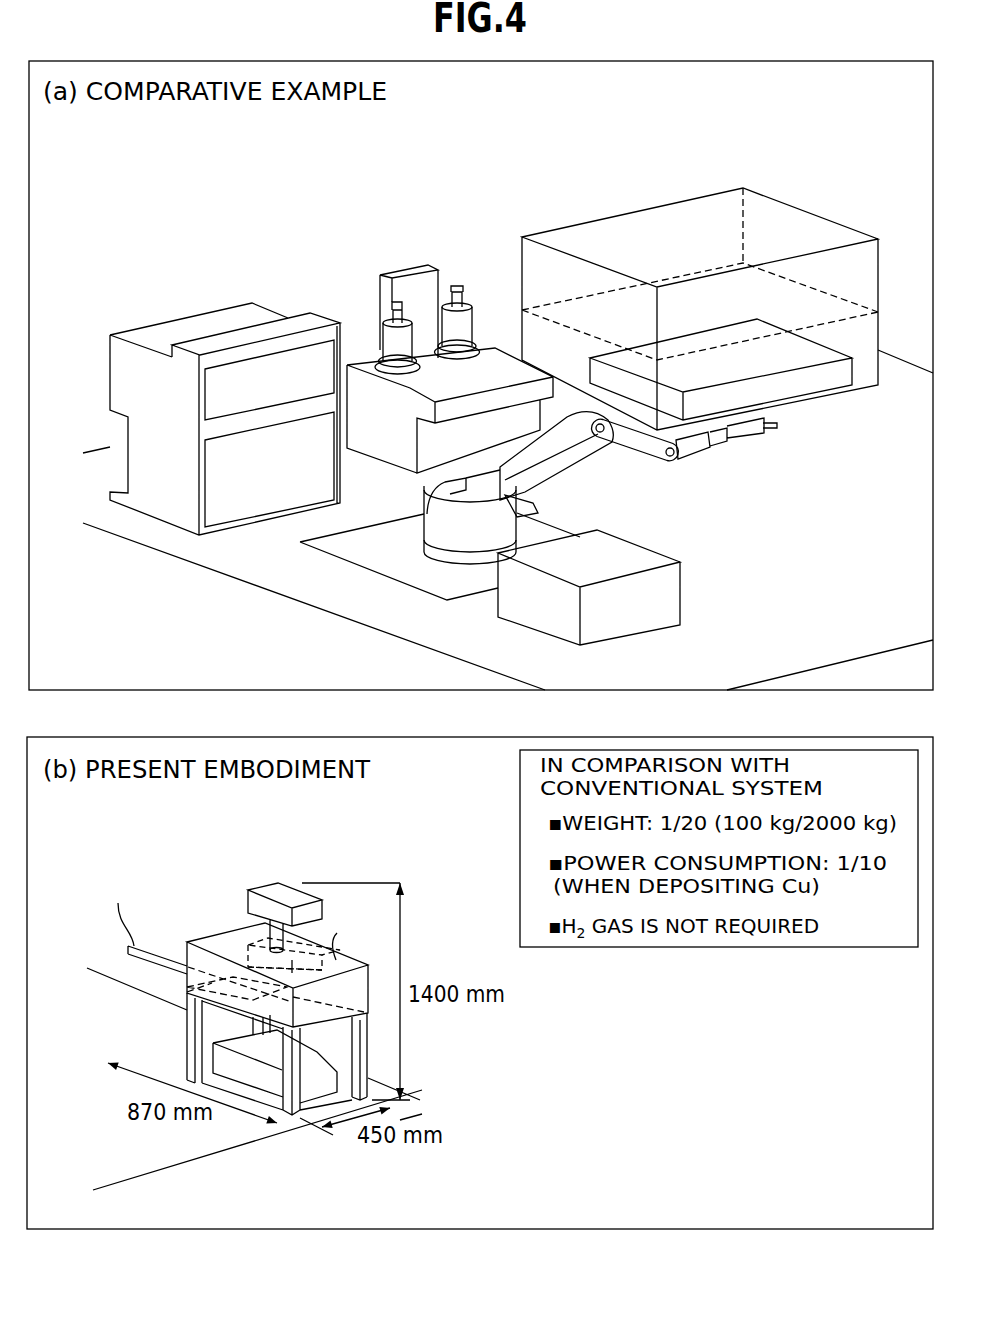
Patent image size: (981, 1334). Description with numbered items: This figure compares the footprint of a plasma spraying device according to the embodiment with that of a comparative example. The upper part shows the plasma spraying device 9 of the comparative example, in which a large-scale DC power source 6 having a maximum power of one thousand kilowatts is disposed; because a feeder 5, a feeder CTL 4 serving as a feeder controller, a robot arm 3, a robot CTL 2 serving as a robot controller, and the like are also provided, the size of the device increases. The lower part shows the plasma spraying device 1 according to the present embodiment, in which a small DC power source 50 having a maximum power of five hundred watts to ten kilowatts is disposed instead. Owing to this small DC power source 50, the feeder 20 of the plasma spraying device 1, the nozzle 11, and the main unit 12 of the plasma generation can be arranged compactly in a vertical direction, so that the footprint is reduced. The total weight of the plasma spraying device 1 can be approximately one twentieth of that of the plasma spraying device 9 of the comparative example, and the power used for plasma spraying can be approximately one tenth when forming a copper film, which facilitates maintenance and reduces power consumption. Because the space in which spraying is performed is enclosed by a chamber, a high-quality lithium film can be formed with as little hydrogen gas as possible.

The plasma spraying device 1 is at (337, 865).
The robot CTL (controller) 2 is at (683, 592).
The robot arm 3 is at (585, 465).
The feeder CTL (controller) 4 is at (157, 492).
The feeder 5 is at (402, 262).
The DC power source 6 is at (735, 388).
The plasma spraying device 9 is at (630, 208).
The nozzle 11 is at (253, 950).
The main unit of the plasma generation 12 is at (240, 953).
The feeder 20 is at (263, 888).
The DC power source 50 is at (303, 1048).